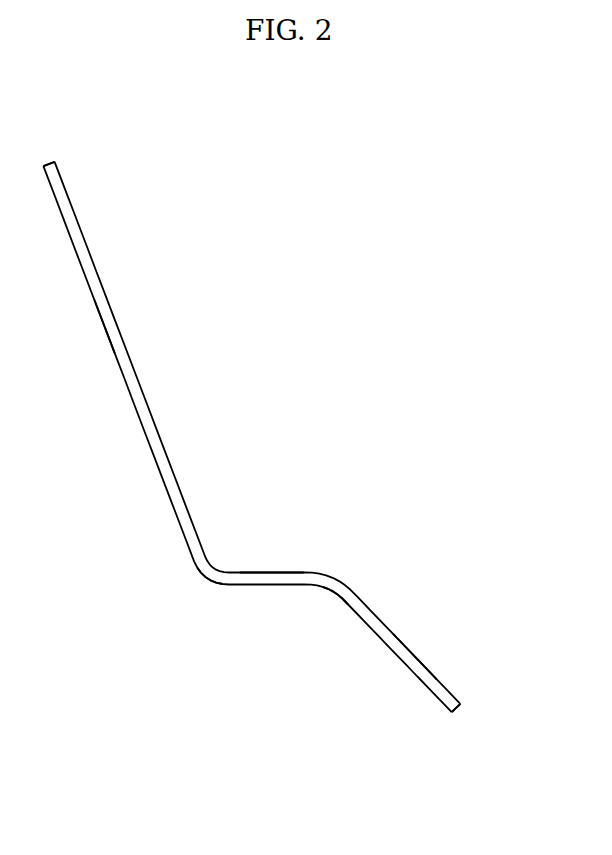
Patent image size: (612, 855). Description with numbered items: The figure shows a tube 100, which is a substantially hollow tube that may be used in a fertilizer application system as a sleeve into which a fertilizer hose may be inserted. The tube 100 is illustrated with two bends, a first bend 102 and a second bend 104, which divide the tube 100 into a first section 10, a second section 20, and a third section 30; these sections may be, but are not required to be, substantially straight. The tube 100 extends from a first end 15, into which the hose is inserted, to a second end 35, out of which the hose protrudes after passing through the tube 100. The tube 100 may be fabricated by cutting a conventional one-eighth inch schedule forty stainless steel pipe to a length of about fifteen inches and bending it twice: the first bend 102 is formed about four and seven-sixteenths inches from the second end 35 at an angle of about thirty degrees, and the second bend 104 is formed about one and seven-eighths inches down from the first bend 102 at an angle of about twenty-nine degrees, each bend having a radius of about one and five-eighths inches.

The tube 100 is at (315, 328).
The first section 10 is at (115, 313).
The first end 15 is at (45, 160).
The second section 20 is at (268, 572).
The third section 30 is at (418, 658).
The second end 35 is at (457, 712).
The first bend 102 is at (347, 577).
The second bend 104 is at (195, 587).